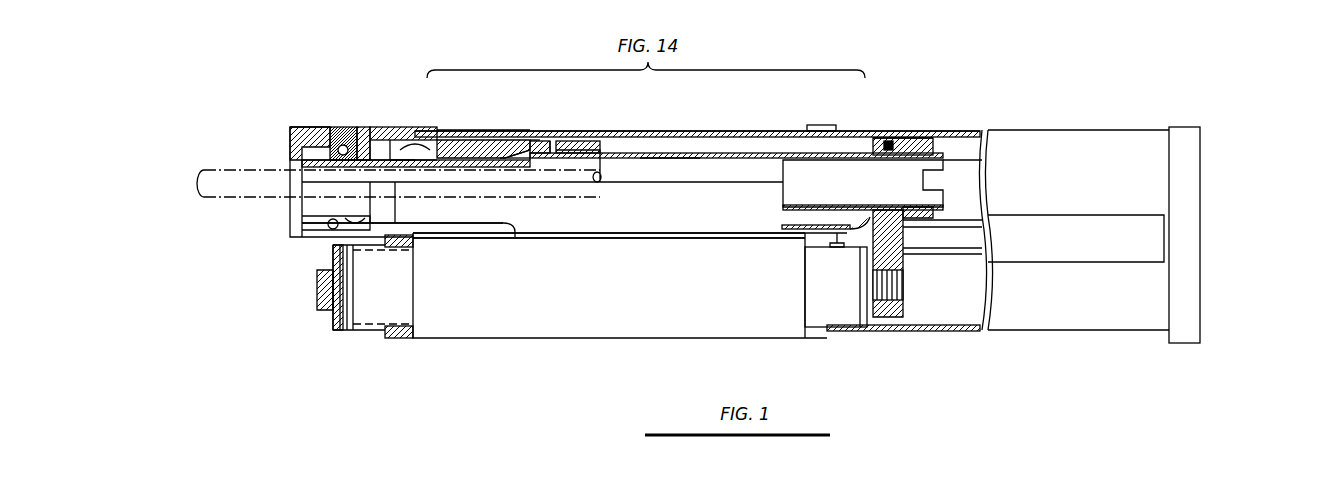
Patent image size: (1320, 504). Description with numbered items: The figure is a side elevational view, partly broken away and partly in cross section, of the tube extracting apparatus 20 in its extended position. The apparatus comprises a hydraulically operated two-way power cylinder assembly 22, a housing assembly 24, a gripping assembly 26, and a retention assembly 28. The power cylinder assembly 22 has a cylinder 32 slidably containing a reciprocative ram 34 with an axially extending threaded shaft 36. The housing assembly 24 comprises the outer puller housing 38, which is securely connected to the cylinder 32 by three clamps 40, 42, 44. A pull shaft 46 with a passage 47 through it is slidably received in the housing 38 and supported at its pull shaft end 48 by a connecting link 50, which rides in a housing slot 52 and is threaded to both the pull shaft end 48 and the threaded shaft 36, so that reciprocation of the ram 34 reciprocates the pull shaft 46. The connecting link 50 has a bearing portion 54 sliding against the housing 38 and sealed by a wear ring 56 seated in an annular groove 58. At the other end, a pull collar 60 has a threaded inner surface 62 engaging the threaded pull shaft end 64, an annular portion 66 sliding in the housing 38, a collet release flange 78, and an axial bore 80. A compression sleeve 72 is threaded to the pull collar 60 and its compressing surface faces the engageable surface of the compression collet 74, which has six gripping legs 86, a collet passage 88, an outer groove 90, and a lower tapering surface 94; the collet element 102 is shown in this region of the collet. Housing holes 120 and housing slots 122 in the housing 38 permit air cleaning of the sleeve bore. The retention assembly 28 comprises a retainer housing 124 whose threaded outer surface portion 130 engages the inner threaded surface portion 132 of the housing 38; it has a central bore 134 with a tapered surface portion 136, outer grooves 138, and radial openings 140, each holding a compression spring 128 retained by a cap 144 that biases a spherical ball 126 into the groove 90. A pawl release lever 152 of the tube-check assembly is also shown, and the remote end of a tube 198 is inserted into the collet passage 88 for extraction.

The tube extracting apparatus 20 is at (1230, 160).
The power cylinder assembly 22 is at (537, 344).
The housing assembly 24 is at (893, 98).
The gripping assembly 26 is at (442, 250).
The retention assembly 28 is at (273, 92).
The cylinder 32 is at (960, 332).
The ram 34 is at (835, 326).
The threaded shaft 36 is at (900, 286).
The outer puller housing 38 is at (718, 134).
The clamp 40 is at (1192, 127).
The clamp 42 is at (832, 127).
The clamp 44 is at (392, 340).
The pull shaft 46 is at (816, 125).
The passage 47 is at (662, 154).
The pull shaft end 48 is at (945, 168).
The connecting link 50 is at (893, 312).
The housing slot 52 is at (848, 230).
The bearing portion 54 is at (935, 146).
The wear ring 56 is at (923, 130).
The annular groove 58 is at (985, 218).
The pull collar 60 is at (548, 130).
The threaded inner surface 62 is at (606, 130).
The threaded pull shaft end 64 is at (590, 160).
The annular portion 66 is at (578, 130).
The compression sleeve 72 is at (472, 136).
The compression collet 74 is at (514, 165).
The collet release flange 78 is at (516, 152).
The bore 80 is at (558, 158).
The gripping legs 86 is at (508, 162).
The collet passage 88 is at (320, 290).
The groove 90 is at (333, 160).
The lower tapering surface 94 is at (350, 166).
The plate 102 is at (422, 168).
The housing holes 120 is at (430, 130).
The housing slots 122 is at (500, 138).
The retainer housing 124 is at (365, 126).
The spherical ball 126 is at (310, 128).
The compression spring 128 is at (338, 126).
The threaded outer surface portion 130 is at (374, 126).
The inner threaded surface portion 132 is at (496, 128).
The central bore 134 is at (404, 128).
The tapered surface portion 136 is at (370, 165).
The grooves 138 is at (330, 240).
The opening 140 is at (290, 133).
The cap 144 is at (347, 126).
The pawl release lever 152 is at (460, 230).
The tube 198 is at (212, 199).